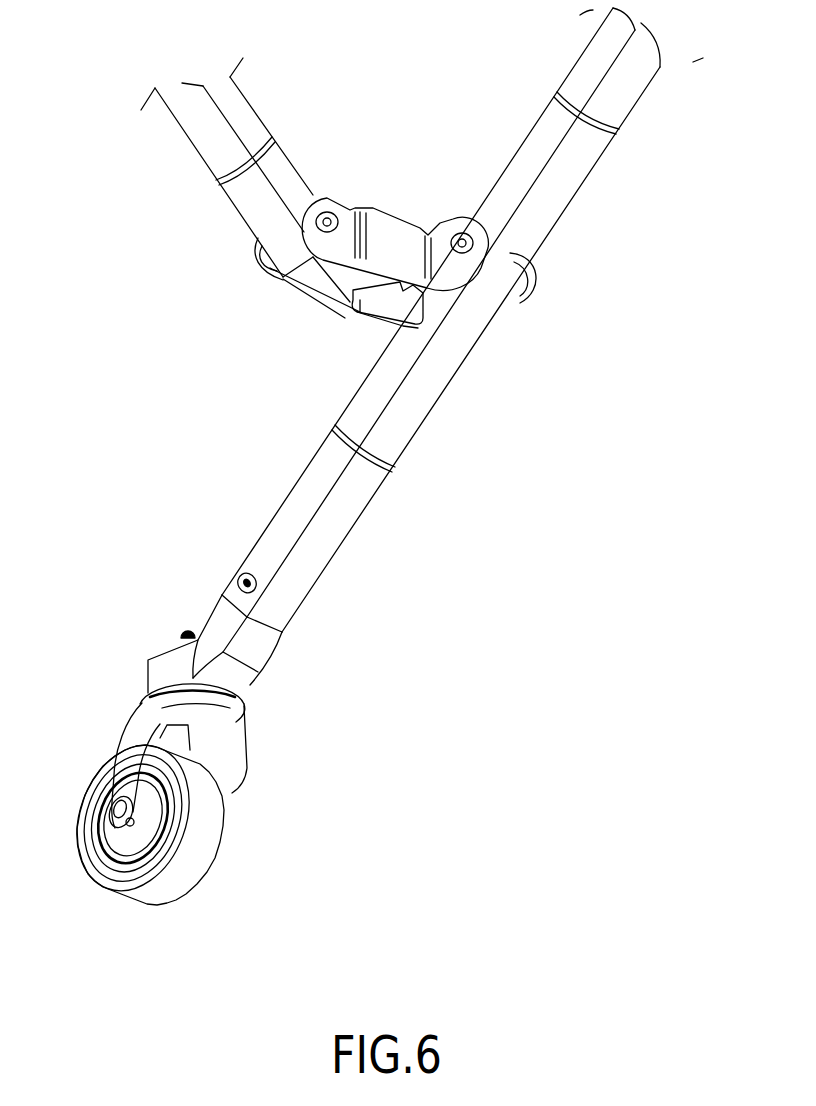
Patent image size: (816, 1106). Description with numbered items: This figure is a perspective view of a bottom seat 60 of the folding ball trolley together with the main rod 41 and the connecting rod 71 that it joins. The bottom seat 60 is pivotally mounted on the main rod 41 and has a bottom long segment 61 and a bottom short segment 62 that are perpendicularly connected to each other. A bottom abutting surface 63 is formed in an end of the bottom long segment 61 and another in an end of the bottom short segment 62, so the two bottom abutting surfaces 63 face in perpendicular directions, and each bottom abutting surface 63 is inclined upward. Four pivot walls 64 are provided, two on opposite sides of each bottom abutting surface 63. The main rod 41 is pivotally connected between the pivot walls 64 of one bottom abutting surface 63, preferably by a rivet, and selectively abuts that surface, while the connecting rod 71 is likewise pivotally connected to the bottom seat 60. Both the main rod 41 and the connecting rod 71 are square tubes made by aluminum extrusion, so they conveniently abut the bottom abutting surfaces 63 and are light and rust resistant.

The main rod 41 is at (380, 457).
The bottom seat 60 is at (407, 197).
The bottom long segment 61 is at (278, 310).
The bottom short segment 62 is at (540, 277).
The bottom abutting surface 63 is at (355, 288).
The pivot wall 64 is at (326, 203).
The connecting rod 71 is at (220, 163).